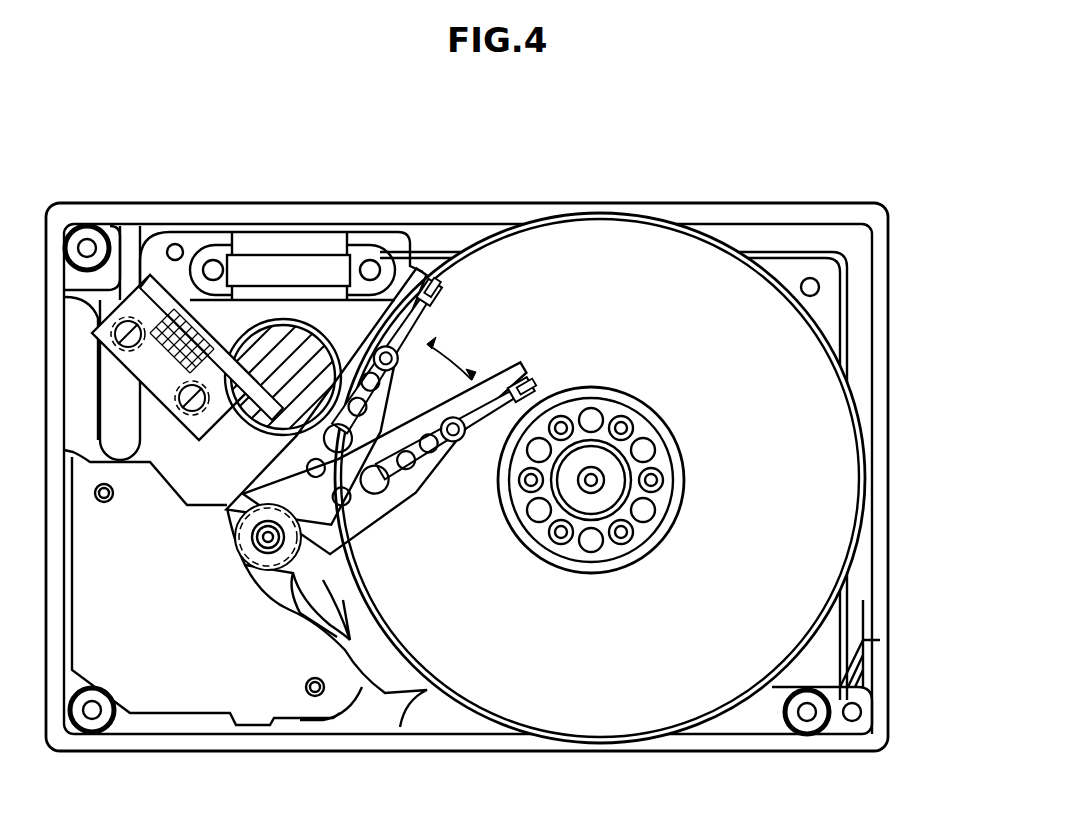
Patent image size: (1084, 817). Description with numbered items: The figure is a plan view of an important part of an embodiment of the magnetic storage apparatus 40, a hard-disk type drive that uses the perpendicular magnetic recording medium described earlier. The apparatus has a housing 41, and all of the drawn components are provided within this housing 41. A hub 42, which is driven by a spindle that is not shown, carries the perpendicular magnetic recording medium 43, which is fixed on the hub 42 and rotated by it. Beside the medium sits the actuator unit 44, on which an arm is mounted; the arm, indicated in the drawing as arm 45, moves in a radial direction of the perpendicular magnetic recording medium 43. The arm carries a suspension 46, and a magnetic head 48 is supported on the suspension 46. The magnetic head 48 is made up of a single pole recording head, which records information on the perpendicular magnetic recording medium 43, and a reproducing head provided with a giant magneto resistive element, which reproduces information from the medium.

The magnetic storage apparatus 40 is at (183, 137).
The housing 41 is at (330, 205).
The hub 42 is at (653, 548).
The perpendicular magnetic recording medium 43 is at (830, 440).
The actuator unit 44 is at (285, 590).
The actuator arm 45 is at (370, 510).
The suspension 46 is at (493, 385).
The magnetic head 48 is at (530, 385).